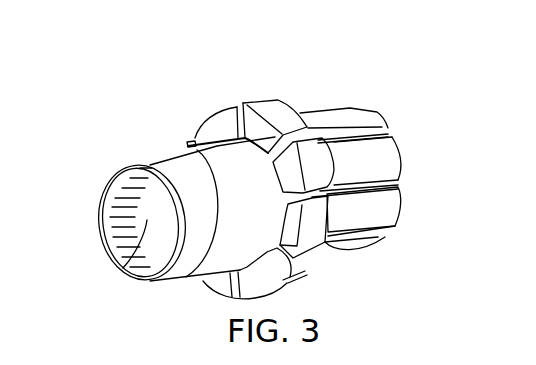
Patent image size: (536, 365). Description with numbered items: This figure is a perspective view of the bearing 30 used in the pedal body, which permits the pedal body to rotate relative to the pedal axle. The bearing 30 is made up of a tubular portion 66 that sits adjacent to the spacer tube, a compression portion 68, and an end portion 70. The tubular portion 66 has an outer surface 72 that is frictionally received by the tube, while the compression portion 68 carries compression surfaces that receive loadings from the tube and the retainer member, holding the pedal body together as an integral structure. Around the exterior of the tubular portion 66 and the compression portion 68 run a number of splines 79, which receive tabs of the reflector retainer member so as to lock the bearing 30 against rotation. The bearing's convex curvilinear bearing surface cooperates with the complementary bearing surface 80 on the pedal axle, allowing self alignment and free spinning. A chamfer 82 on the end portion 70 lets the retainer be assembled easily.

The bearing 30 is at (257, 84).
The tubular portion 66 is at (348, 247).
The compression portion 68 is at (283, 287).
The end portion 70 is at (212, 265).
The outer surface 72 is at (353, 123).
The splines 79 is at (310, 198).
The bearing surface 80 is at (120, 277).
The chamfer 82 is at (147, 161).